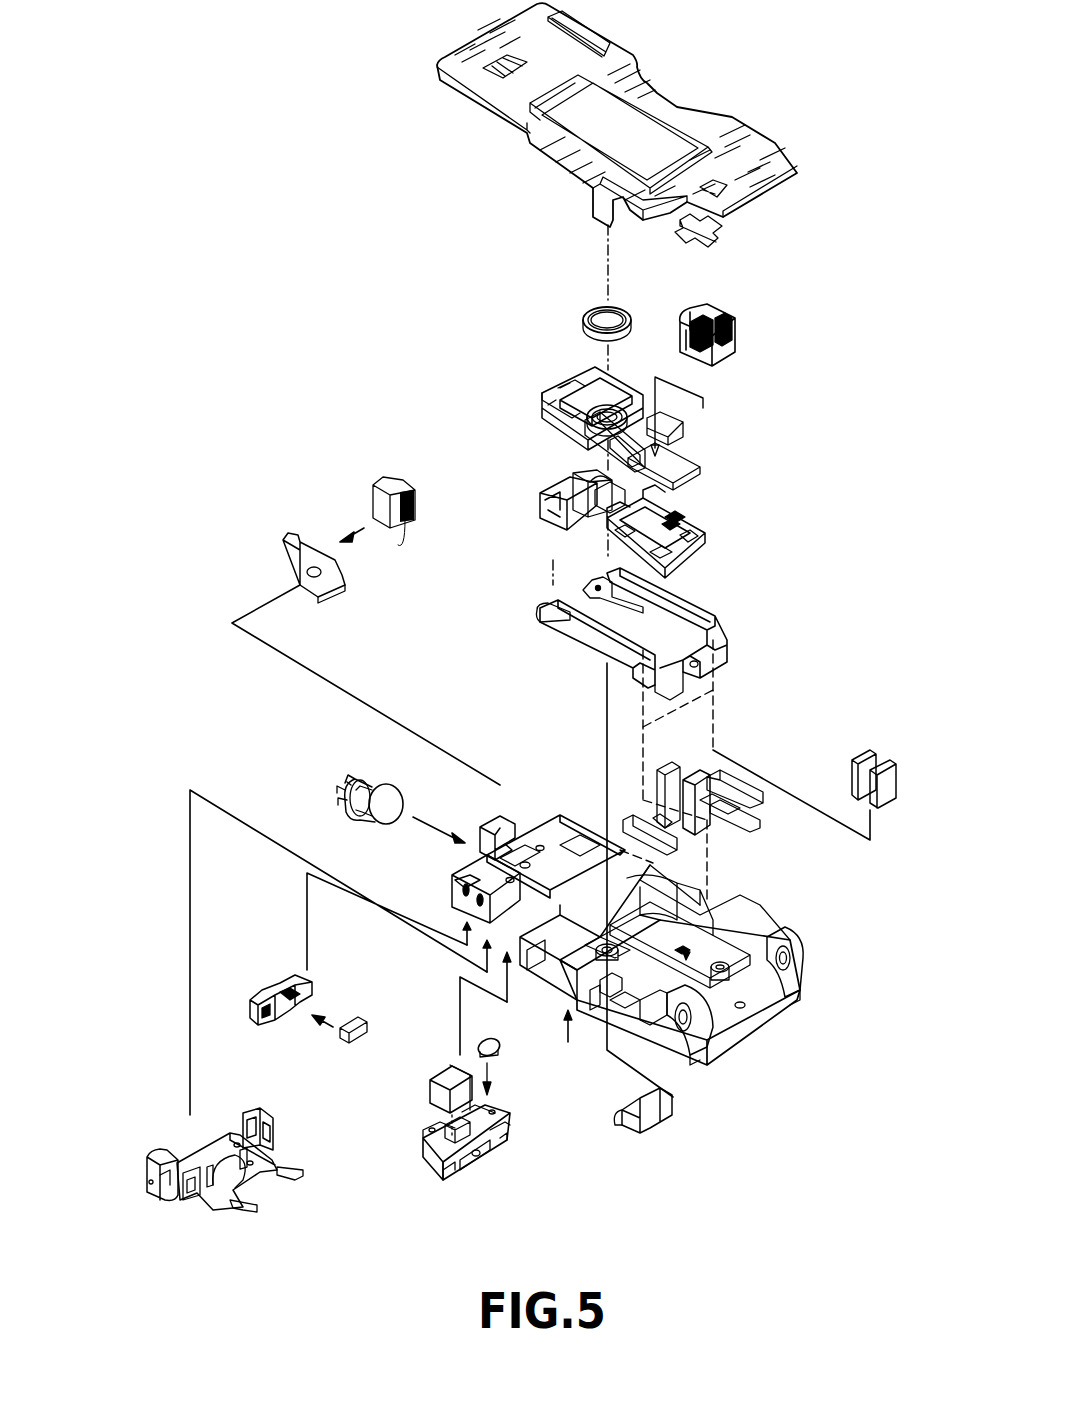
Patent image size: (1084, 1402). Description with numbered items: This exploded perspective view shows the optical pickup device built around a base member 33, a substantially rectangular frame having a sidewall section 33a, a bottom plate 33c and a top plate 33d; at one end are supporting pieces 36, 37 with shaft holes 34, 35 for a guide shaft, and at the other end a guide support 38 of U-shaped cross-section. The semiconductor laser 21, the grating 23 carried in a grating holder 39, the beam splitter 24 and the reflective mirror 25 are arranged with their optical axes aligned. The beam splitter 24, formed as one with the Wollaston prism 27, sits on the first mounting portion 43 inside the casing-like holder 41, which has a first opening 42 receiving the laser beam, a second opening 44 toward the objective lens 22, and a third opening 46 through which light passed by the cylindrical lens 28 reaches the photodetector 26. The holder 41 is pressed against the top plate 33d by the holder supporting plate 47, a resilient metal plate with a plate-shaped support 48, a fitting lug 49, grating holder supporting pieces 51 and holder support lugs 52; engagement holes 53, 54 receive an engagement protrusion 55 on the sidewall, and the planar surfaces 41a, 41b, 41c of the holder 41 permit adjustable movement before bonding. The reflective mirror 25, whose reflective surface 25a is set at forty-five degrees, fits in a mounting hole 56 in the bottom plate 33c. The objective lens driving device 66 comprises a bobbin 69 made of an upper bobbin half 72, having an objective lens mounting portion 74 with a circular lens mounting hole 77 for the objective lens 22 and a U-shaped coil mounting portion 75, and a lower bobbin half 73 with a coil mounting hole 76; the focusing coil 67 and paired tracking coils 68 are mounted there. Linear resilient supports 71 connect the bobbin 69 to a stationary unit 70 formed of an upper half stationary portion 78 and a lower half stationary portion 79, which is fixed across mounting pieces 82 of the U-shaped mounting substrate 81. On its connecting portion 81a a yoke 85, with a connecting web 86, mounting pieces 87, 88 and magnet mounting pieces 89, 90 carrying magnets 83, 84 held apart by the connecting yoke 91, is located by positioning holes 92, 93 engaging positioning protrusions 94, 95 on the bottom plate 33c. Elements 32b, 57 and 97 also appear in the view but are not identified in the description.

The semiconductor laser 21 is at (340, 803).
The objective lens 22 is at (583, 322).
The grating 23 is at (362, 1020).
The beam splitter 24 is at (435, 1085).
The reflective mirror 25 is at (665, 1115).
The reflective surface 25a is at (625, 1127).
The photodetector 26 is at (390, 522).
The Wollaston prism 27 is at (465, 1072).
The cylindrical lens 28 is at (500, 1040).
The recess 32b is at (547, 963).
The base member 33 is at (752, 1000).
The sidewall section 33a is at (705, 907).
The bottom plate 33c is at (668, 1005).
The top plate 33d is at (545, 843).
The shaft hole 34 is at (688, 1045).
The shaft hole 35 is at (800, 950).
The supporting piece 36 is at (713, 1022).
The supporting piece 37 is at (808, 966).
The guide support 38 is at (480, 806).
The grating holder 39 is at (360, 972).
The holder 41 is at (423, 1150).
The surface 41a is at (505, 1135).
The surface 41b is at (450, 1172).
The surface 41c is at (505, 1145).
The first opening 42 is at (430, 1135).
The first mounting portion 43 is at (443, 1172).
The second opening 44 is at (480, 1152).
The third opening 46 is at (482, 1070).
The holder supporting plate 47 is at (155, 1158).
The plate-shaped support 48 is at (200, 1158).
The fitting lug 49 is at (190, 1200).
The grating holder supporting piece 51 is at (210, 1195).
The holder support lug 52 is at (258, 1208).
The engagement hole 53 is at (265, 1120).
The engagement hole 54 is at (178, 1192).
The engagement protrusion 55 is at (478, 905).
The mounting hole 56 is at (608, 945).
The cover plate 57 is at (337, 590).
The objective lens driving device 66 is at (818, 246).
The focusing coil 67 is at (728, 346).
The tracking coil 68 is at (714, 312).
The bobbin 69 is at (773, 440).
The stationary unit 70 is at (485, 520).
The resilient support 71 is at (592, 527).
The upper bobbin half 72 is at (690, 438).
The lower bobbin half 73 is at (702, 528).
The objective lens mounting portion 74 is at (568, 445).
The coil mounting portion 75 is at (596, 445).
The coil mounting hole 76 is at (682, 528).
The lens mounting hole 77 is at (626, 398).
The upper half stationary portion 78 is at (552, 393).
The lower half stationary portion 79 is at (545, 500).
The mounting substrate 81 is at (548, 628).
The connecting portion 81a is at (672, 695).
The mounting piece 82 is at (612, 595).
The magnet 83 is at (898, 763).
The magnet 84 is at (860, 755).
The yoke 85 is at (800, 840).
The connecting web 86 is at (710, 835).
The mounting piece 87 is at (740, 775).
The mounting piece 88 is at (625, 825).
The magnet mounting piece 89 is at (712, 812).
The magnet mounting piece 90 is at (660, 775).
The connecting yoke 91 is at (676, 243).
The positioning hole 92 is at (655, 815).
The positioning hole 93 is at (693, 757).
The positioning protrusion 94 is at (607, 985).
The positioning protrusion 95 is at (720, 927).
The cover 97 is at (455, 78).